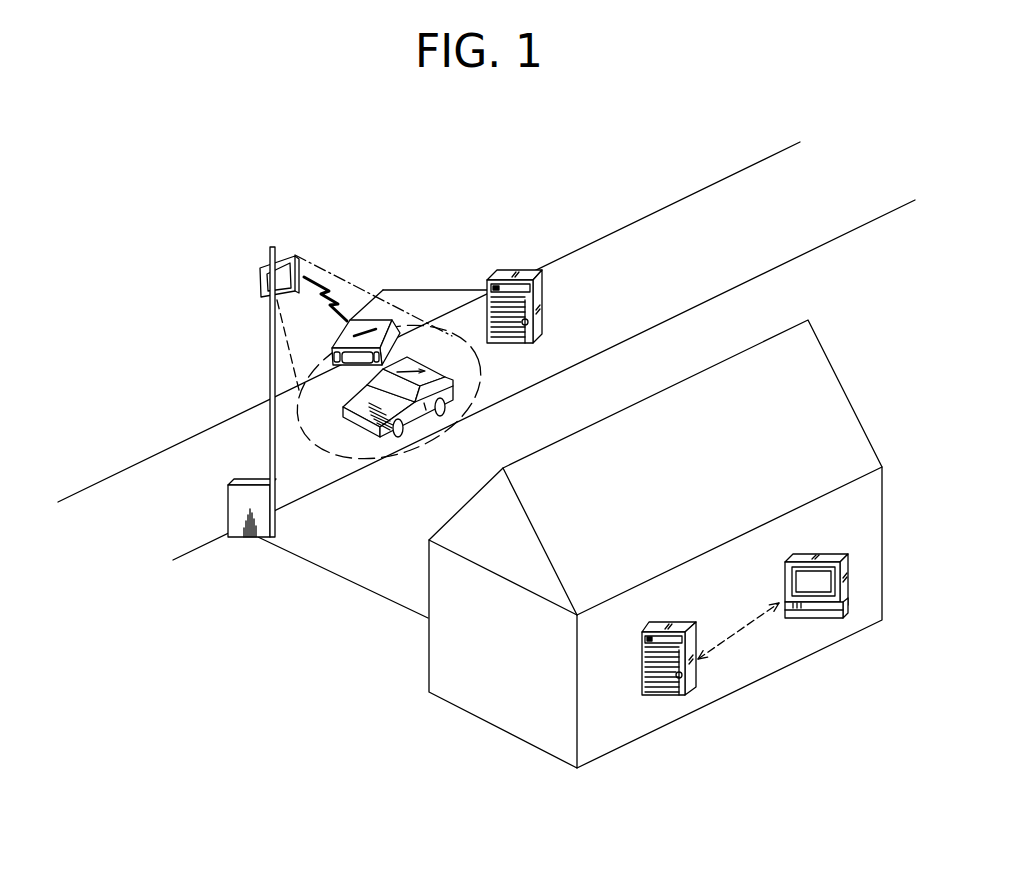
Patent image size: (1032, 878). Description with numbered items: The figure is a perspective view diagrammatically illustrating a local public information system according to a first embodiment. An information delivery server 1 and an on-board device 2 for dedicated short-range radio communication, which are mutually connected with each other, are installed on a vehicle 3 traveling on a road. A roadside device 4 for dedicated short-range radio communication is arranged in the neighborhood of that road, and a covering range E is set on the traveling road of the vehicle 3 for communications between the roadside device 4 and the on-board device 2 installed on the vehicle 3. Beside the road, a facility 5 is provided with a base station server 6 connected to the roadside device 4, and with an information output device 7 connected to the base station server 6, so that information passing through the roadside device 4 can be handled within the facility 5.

The information delivery server 1 is at (515, 272).
The on-board device 2 is at (373, 323).
The vehicle 3 is at (447, 410).
The roadside device 4 is at (267, 266).
The facility 5 is at (428, 653).
The base station server 6 is at (693, 673).
The information output device 7 is at (815, 618).
The covering range E is at (387, 450).